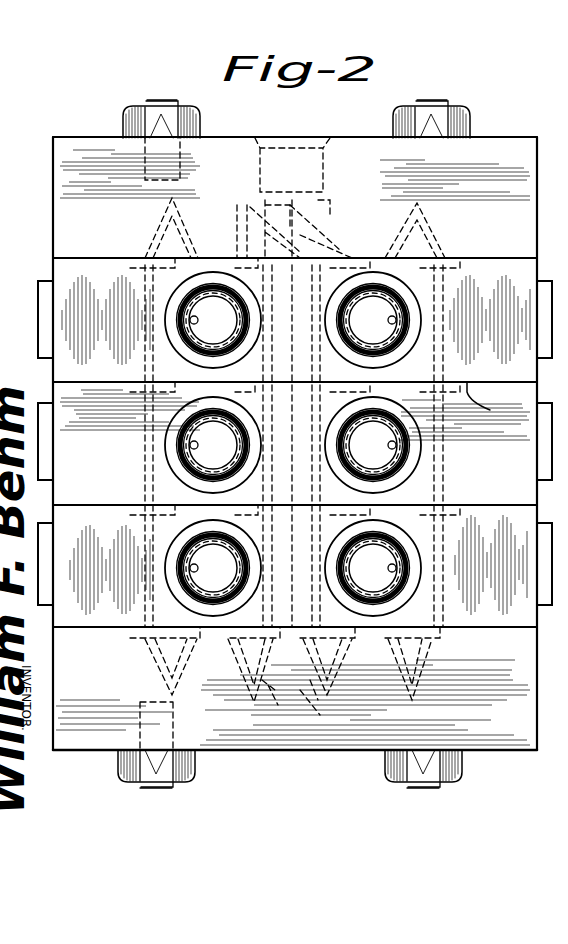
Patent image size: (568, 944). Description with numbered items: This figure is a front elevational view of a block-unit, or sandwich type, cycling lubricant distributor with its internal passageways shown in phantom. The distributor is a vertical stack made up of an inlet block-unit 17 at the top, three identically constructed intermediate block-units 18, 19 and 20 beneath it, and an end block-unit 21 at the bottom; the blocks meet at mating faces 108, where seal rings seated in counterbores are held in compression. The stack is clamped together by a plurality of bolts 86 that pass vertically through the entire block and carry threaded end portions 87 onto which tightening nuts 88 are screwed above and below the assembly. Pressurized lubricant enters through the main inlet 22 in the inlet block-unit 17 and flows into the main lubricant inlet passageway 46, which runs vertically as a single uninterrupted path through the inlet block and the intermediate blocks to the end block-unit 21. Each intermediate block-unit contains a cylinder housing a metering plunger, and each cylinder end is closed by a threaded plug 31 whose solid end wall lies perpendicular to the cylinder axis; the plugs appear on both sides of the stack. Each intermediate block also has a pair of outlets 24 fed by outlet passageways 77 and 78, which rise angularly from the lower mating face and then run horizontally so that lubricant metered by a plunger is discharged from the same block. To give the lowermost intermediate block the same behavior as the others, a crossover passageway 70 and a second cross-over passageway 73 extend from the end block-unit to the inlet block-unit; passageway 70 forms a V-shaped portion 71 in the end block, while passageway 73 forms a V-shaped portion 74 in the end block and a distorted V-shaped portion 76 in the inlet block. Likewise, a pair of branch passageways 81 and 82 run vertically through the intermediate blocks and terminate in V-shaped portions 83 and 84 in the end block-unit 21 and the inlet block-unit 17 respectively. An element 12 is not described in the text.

The passage 12 is at (240, 242).
The inlet block-unit 17 is at (53, 222).
The intermediate block-unit 18 is at (53, 268).
The intermediate block-unit 19 is at (53, 392).
The intermediate block-unit 20 is at (53, 514).
The end block-unit 21 is at (53, 670).
The main inlet 22 is at (304, 138).
The outlet 24 is at (165, 312).
The plug 31 is at (38, 316).
The main lubricant inlet passageway 46 is at (295, 368).
The crossover passageway 70 is at (316, 480).
The V-shaped portion 71 is at (310, 713).
The cross-over passageway 73 is at (262, 478).
The V-shaped portion 74 is at (271, 709).
The distorted V-shaped portion 76 is at (328, 233).
The outlet passageway 77 is at (197, 323).
The outlet passageway 78 is at (389, 323).
The branch passageway 81 is at (145, 356).
The branch passageway 82 is at (446, 296).
The V-shaped portion 83 is at (152, 665).
The V-shaped portion 84 is at (153, 240).
The bolt 86 is at (178, 96).
The threaded end portion 87 is at (136, 175).
The tightening nut 88 is at (200, 122).
The mating face 108 is at (479, 354).